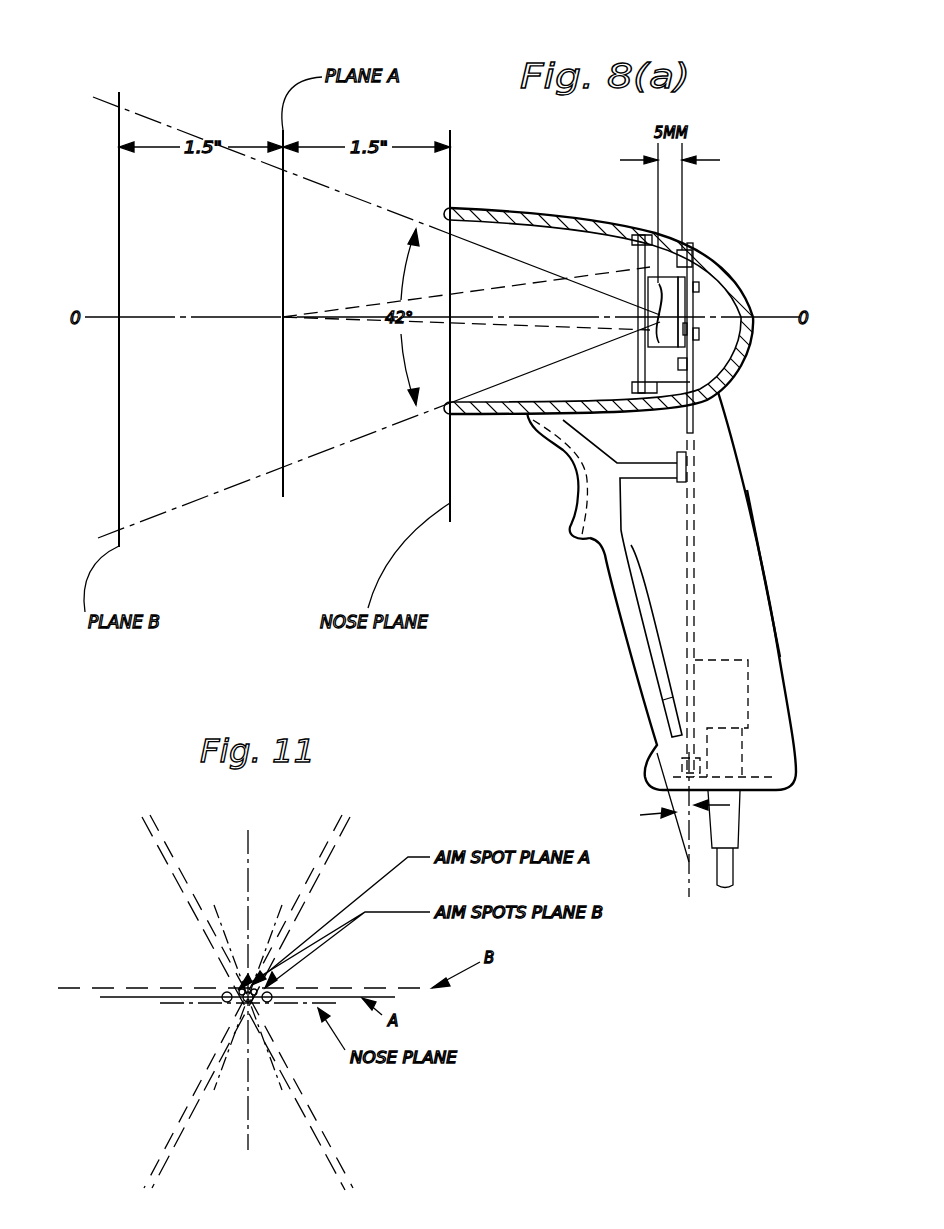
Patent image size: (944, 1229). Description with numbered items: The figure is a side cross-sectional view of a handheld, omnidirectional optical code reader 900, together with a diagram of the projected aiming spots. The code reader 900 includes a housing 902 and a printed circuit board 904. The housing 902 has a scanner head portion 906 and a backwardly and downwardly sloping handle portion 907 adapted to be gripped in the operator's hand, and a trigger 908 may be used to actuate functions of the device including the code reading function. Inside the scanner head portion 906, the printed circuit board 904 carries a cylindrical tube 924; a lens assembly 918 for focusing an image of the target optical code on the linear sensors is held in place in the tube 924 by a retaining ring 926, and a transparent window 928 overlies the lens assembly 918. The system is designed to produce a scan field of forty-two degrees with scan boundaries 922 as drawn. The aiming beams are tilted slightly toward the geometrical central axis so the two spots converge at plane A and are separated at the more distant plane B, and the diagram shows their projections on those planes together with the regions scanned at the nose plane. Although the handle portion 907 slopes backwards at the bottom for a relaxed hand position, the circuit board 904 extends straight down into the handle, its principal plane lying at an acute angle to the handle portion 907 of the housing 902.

The code reader 900 is at (750, 490).
The housing 902 is at (744, 372).
The printed circuit board 904 is at (688, 268).
The scanner head portion 906 is at (494, 207).
The handle portion 907 is at (764, 540).
The trigger 908 is at (577, 487).
The lens assembly 918 is at (662, 283).
The scan boundaries 922 is at (152, 121).
The cylindrical tube 924 is at (680, 258).
The retaining ring 926 is at (657, 287).
The transparent window 928 is at (637, 264).